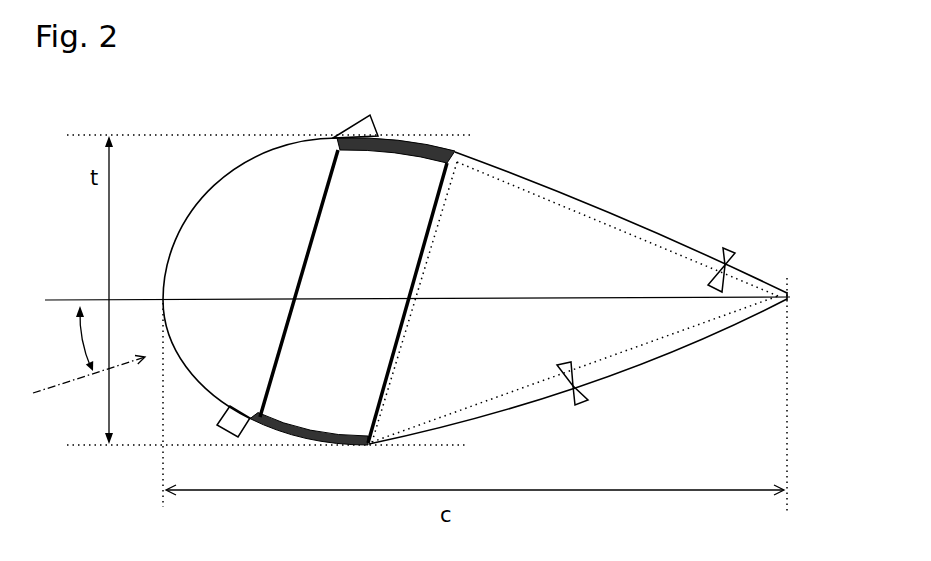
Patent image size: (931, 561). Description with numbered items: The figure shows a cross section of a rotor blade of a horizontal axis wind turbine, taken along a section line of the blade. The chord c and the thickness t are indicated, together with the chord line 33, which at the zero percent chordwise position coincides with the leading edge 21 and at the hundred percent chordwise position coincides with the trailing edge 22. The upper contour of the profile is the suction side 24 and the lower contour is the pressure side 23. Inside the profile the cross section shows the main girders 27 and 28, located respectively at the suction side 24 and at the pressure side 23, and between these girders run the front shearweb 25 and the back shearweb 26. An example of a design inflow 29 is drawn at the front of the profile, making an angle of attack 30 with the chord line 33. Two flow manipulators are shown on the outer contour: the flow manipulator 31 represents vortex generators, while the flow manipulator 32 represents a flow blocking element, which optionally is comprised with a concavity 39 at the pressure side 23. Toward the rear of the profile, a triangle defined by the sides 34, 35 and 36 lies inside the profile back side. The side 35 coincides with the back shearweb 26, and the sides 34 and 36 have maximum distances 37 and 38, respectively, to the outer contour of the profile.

The leading edge 21 is at (162, 275).
The trailing edge 22 is at (790, 297).
The pressure side 23 is at (717, 333).
The suction side 24 is at (540, 182).
The front shearweb 25 is at (310, 240).
The back shearweb 26 is at (415, 270).
The main girder 27 is at (421, 160).
The main girder 28 is at (308, 428).
The design inflow 29 is at (72, 385).
The angle of attack 30 is at (86, 355).
The flow manipulator 31 is at (380, 125).
The flow manipulator 32 is at (240, 400).
The chord line 33 is at (212, 300).
The side of triangle 34 is at (515, 187).
The side of triangle 35 is at (403, 343).
The side of triangle 36 is at (520, 390).
The maximum distance 37 is at (712, 267).
The maximum distance 38 is at (576, 385).
The concavity 39 is at (225, 412).